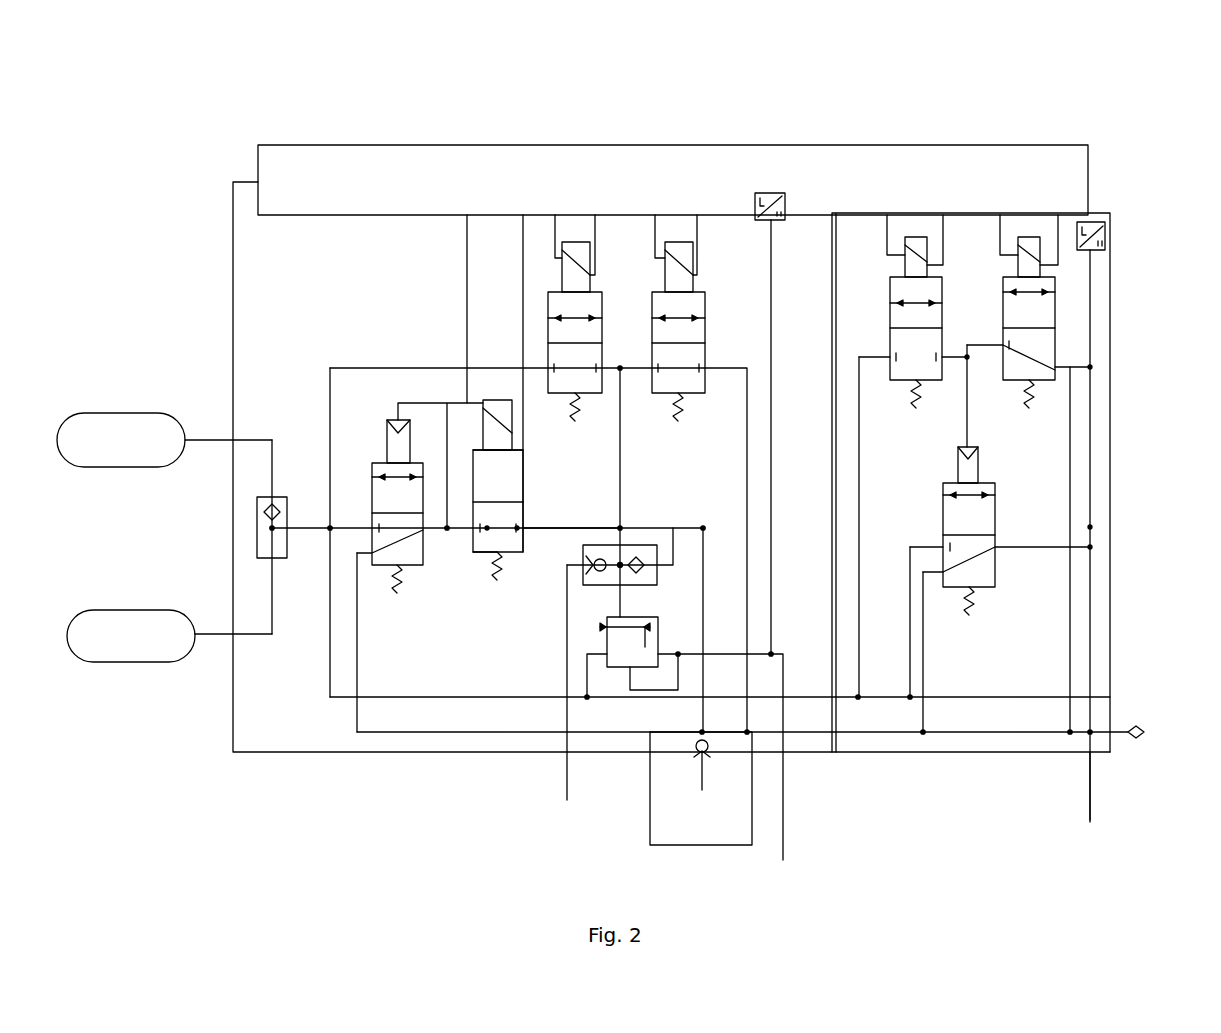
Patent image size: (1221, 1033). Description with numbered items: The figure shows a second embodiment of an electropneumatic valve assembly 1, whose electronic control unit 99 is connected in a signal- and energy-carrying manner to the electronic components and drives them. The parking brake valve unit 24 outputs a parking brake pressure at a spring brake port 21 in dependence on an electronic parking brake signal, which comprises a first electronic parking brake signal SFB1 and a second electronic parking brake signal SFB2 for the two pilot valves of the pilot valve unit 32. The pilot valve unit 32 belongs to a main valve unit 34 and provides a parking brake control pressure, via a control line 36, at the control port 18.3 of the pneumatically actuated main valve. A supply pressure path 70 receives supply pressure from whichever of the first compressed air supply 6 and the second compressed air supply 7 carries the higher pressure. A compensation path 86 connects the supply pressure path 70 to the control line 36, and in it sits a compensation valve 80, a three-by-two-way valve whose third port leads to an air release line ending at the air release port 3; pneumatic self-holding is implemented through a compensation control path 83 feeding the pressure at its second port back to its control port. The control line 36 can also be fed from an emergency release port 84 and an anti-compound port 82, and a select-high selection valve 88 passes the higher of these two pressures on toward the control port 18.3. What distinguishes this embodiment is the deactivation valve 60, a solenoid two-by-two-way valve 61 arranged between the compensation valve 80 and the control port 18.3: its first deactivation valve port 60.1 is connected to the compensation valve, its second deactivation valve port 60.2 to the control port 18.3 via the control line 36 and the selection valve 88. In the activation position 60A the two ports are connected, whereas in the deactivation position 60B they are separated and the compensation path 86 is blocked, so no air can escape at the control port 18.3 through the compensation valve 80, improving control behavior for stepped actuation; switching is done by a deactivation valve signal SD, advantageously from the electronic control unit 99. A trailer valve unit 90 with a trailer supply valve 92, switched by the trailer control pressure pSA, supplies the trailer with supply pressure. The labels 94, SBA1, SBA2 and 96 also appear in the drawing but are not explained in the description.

The electropneumatic valve assembly 1 is at (372, 118).
The electronic control unit 99 is at (745, 168).
The parking brake valve unit 24 is at (750, 305).
The trailer valve unit 90 is at (1085, 285).
The service brake module 94 is at (855, 310).
The solenoid valve control signal SBA1 is at (888, 240).
The solenoid valve control signal SBA2 is at (1000, 240).
The trailer control pressure pSA is at (972, 410).
The trailer supply valve 92 is at (982, 515).
The deactivation valve signal SD is at (467, 232).
The pilot valve unit 32 is at (528, 252).
The first electronic parking brake signal SFB1 is at (520, 295).
The second electronic parking brake signal SFB2 is at (655, 238).
The control line 36 is at (622, 428).
The compensation valve 80 is at (380, 470).
The compensation control path 83 is at (400, 418).
The supply pressure path 70 is at (318, 540).
The deactivation valve 60 is at (504, 422).
The 2/2-way valve 61 is at (504, 422).
The deactivation position 60B is at (525, 465).
The second deactivation valve port 60.2 is at (525, 530).
The first deactivation valve port 60.1 is at (483, 553).
The activation position 60A is at (495, 562).
The compensation path 86 is at (550, 545).
The second compressed air supply 7 is at (85, 440).
The first compressed air supply 6 is at (85, 625).
The selection valve 88 is at (618, 545).
The control port 18.3 is at (622, 615).
The main valve unit 34 is at (548, 650).
The anti-compound port 82 is at (565, 780).
The emergency release port 84 is at (702, 788).
The spring brake port 21 is at (785, 845).
The pressure line pVA 96 is at (1090, 787).
The air release port 3 is at (1135, 728).